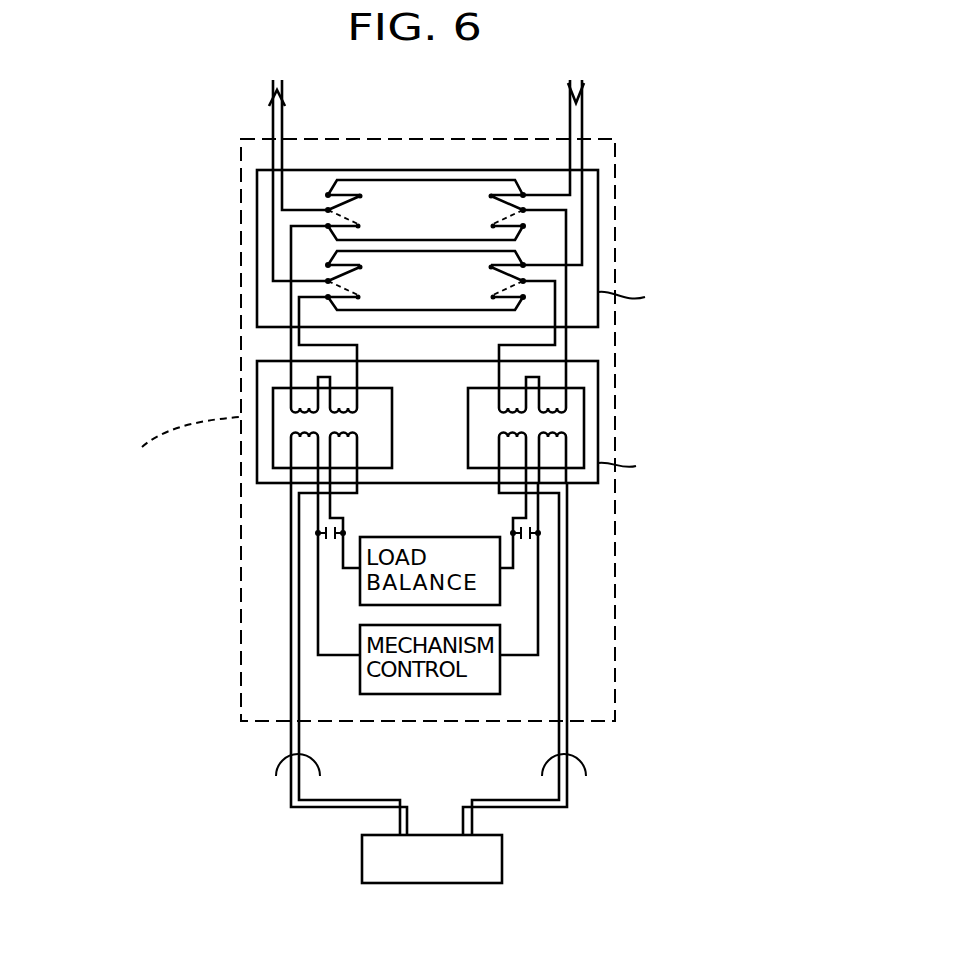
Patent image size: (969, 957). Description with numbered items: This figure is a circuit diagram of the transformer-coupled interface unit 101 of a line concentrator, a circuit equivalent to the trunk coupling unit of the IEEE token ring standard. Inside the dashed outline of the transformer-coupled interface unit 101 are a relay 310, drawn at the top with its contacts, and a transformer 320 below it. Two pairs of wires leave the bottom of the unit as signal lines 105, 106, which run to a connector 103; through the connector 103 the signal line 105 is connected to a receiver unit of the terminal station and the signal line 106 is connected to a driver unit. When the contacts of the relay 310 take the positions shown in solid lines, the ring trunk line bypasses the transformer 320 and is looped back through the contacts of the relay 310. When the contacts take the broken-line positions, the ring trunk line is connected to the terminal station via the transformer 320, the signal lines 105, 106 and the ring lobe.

The transformer-coupled interface unit 101 is at (240, 218).
The relay 310 is at (598, 222).
The transformer 320 is at (598, 415).
The connector 103 is at (502, 860).
The signal line 105 is at (588, 772).
The signal line 106 is at (275, 770).